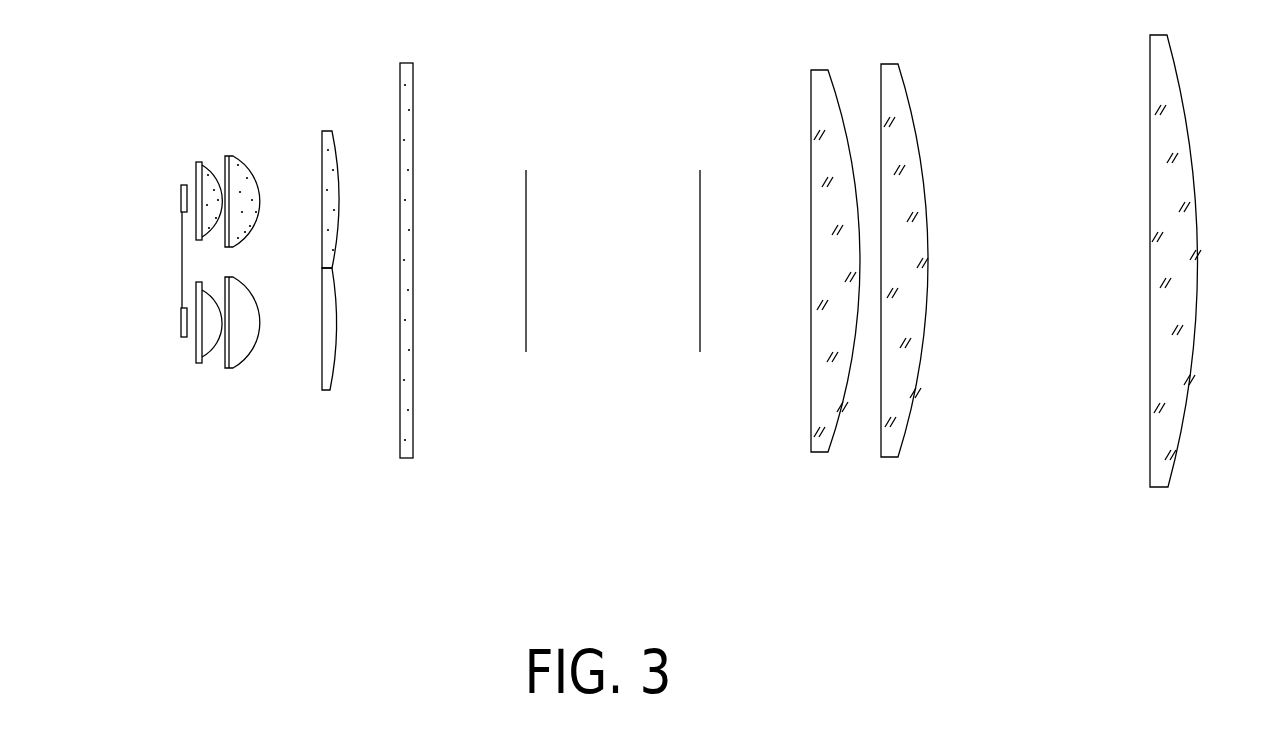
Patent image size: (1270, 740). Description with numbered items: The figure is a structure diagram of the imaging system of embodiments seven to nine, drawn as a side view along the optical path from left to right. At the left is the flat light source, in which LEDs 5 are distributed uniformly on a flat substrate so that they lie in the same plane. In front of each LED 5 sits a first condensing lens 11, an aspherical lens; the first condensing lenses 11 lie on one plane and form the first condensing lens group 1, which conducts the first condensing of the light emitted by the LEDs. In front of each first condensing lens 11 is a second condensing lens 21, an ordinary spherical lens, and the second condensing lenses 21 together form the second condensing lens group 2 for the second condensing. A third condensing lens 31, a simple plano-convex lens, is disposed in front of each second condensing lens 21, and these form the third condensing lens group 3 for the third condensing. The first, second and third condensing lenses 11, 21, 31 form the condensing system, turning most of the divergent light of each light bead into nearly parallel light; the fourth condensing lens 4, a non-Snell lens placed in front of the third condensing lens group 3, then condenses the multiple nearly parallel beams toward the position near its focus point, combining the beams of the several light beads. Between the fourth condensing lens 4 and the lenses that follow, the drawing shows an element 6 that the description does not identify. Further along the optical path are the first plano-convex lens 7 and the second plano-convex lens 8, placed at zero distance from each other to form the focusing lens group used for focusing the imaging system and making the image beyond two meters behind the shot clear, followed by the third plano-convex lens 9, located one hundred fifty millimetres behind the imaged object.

The first condensing lens group 1 is at (194, 237).
The second condensing lens group 2 is at (231, 240).
The third condensing lens group 3 is at (305, 251).
The fourth condensing lens 4 is at (403, 459).
The LED 5 is at (182, 338).
The aperture stop 6 is at (622, 350).
The first plano-convex lens 7 is at (817, 453).
The second plano-convex lens 8 is at (900, 458).
The third plano-convex lens 9 is at (1149, 488).
The first condensing lens 11 is at (200, 364).
The second condensing lens 21 is at (235, 369).
The third condensing lens 31 is at (326, 391).